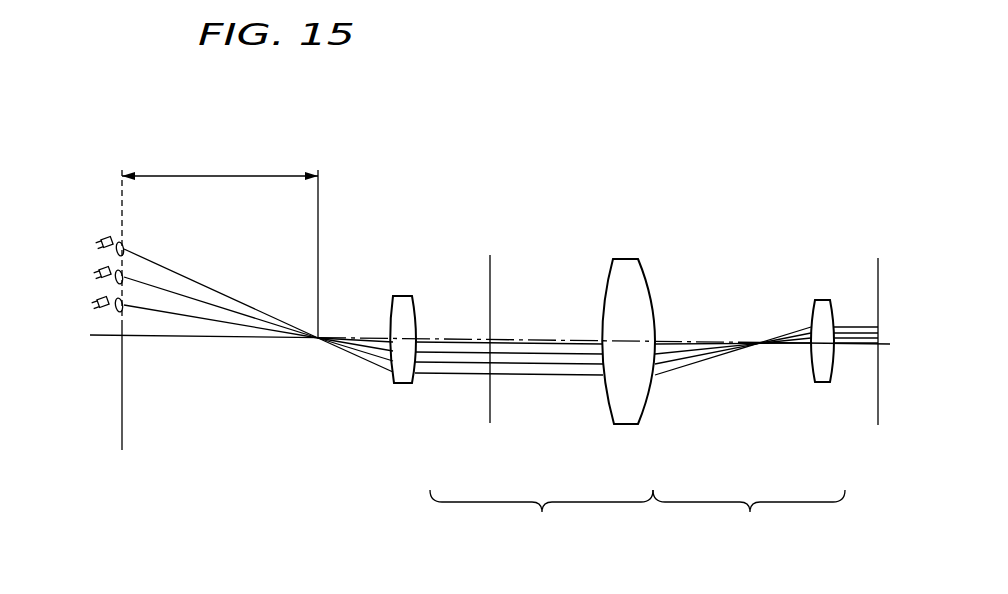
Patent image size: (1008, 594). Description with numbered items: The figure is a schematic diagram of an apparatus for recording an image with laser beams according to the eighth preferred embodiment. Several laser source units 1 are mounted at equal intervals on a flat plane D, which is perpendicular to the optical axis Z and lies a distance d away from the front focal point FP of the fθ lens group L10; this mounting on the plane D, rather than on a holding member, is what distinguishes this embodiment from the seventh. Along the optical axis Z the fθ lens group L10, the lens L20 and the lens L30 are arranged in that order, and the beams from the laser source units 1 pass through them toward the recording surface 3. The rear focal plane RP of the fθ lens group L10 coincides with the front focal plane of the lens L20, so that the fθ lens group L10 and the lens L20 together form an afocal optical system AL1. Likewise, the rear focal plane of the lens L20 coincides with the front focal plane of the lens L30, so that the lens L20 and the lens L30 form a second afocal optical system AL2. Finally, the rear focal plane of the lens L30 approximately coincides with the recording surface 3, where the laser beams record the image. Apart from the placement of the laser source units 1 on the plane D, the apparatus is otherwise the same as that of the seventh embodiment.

The laser source unit 1 is at (95, 292).
The distance d is at (220, 160).
The optical axis Z is at (154, 337).
The flat plane D is at (122, 433).
The front focal point FP is at (318, 343).
The rear focal plane RP is at (488, 293).
The fθ lens group L10 is at (398, 385).
The lens L20 is at (631, 425).
The lens L30 is at (817, 383).
The recording surface 3 is at (877, 405).
The afocal optical system AL1 is at (541, 523).
The afocal optical system AL2 is at (749, 523).